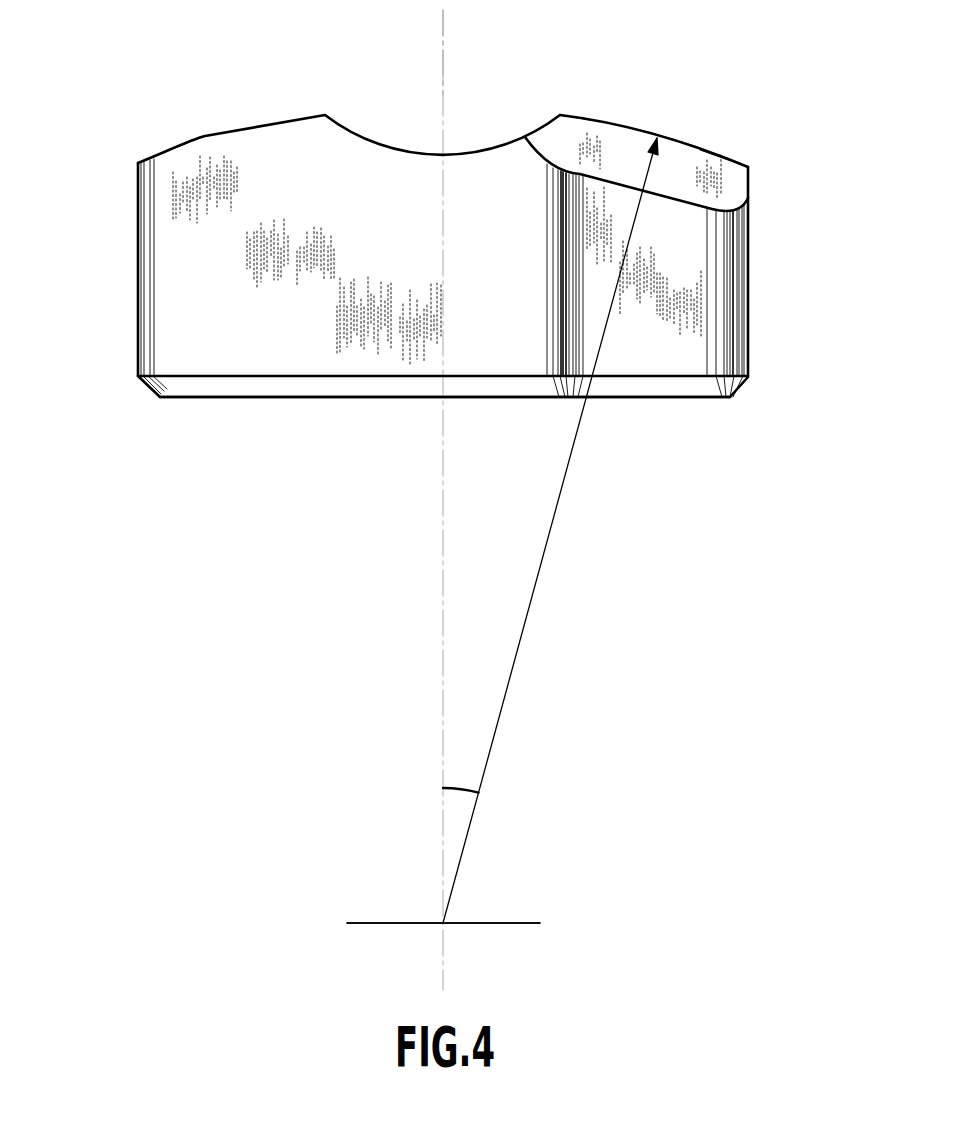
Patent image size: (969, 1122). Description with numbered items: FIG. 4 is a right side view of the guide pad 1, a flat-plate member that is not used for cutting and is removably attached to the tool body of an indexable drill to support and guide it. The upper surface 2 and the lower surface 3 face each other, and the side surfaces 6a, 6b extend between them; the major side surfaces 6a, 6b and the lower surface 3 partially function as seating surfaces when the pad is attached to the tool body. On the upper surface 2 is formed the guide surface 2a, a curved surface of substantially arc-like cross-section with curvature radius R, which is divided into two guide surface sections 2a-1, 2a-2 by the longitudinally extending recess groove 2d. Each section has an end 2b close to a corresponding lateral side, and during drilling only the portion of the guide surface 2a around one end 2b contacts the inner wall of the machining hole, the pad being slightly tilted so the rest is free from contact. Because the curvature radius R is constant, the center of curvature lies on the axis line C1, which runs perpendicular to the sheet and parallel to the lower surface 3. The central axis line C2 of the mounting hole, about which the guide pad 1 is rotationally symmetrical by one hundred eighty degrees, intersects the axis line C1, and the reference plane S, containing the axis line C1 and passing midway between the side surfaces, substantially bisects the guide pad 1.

The guide pad 1 is at (706, 74).
The upper surface 2 is at (296, 117).
The guide surface 2a is at (243, 130).
The first guide surface section 2a-1 is at (200, 138).
The second guide surface section 2a-2 is at (708, 150).
The end of guide surface section 2b is at (732, 190).
The recess groove 2d is at (397, 148).
The lower surface 3 is at (278, 397).
The major side surface 6a is at (138, 240).
The connecting side surface 6b is at (365, 360).
The curvature radius R is at (550, 530).
The axis line C1 is at (443, 922).
The central axis line of mounting hole C2 is at (443, 78).
The reference plane S is at (443, 43).